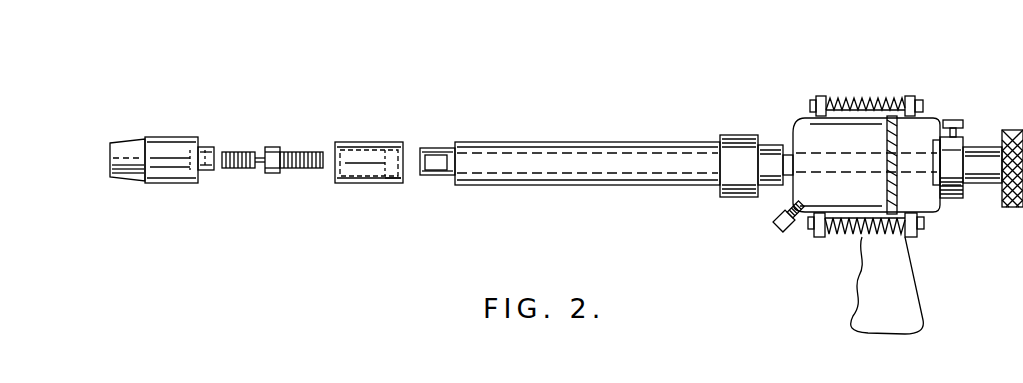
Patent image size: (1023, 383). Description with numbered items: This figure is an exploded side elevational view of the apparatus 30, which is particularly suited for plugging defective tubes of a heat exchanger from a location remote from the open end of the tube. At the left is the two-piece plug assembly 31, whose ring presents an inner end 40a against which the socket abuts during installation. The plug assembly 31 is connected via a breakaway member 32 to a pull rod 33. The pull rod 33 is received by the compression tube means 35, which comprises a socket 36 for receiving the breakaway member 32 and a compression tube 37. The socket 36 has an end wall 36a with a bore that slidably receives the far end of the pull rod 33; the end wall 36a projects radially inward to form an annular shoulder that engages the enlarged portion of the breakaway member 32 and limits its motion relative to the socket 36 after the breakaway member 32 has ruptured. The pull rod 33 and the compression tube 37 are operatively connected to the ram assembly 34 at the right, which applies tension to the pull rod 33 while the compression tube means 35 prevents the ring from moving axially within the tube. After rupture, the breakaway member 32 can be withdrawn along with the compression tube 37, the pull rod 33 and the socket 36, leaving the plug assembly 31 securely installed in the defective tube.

The apparatus 30 is at (618, 118).
The two-piece plug assembly 31 is at (170, 184).
The breakaway member 32 is at (274, 175).
The pull rod 33 is at (445, 178).
The ram assembly 34 is at (757, 88).
The compression tube means 35 is at (478, 133).
The socket 36 is at (360, 141).
The socket end wall 36a is at (403, 180).
The compression tube 37 is at (538, 141).
The inner end of the ring 40a is at (205, 172).